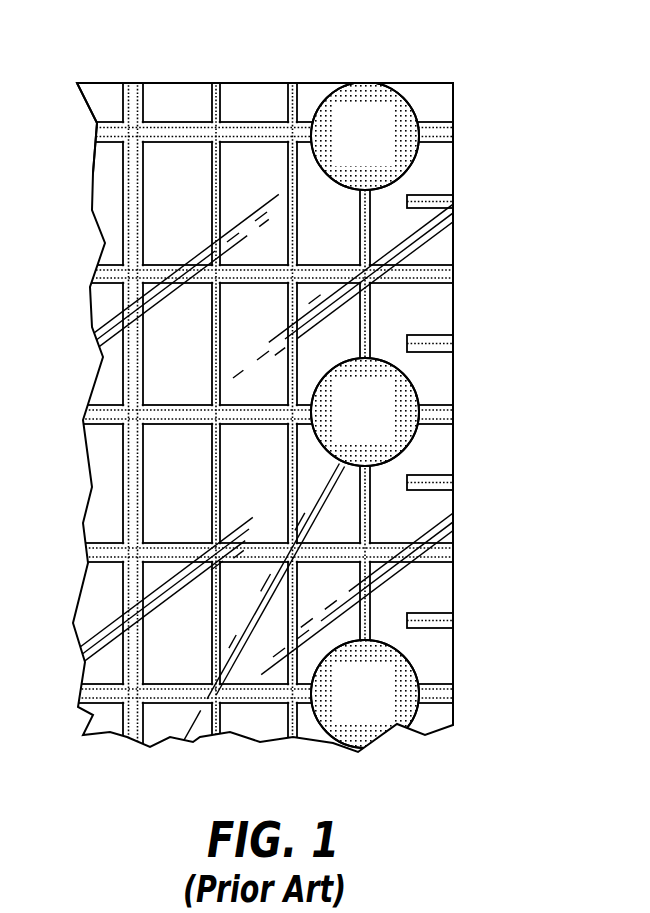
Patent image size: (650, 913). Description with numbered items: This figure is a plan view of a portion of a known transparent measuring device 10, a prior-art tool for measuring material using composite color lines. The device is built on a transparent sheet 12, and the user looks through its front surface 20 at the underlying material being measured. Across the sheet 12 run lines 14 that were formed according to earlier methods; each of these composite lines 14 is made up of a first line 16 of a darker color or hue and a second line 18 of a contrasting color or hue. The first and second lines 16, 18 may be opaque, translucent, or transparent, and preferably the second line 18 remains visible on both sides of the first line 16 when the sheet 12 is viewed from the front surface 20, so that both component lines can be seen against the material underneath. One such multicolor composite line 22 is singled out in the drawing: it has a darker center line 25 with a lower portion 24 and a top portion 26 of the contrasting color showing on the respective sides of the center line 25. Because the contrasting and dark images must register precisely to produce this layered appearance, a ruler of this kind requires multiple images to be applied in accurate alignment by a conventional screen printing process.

The transparent measuring device 10 is at (320, 385).
The sheet 12 is at (463, 236).
The lines 14 is at (114, 213).
The first line 16 is at (110, 405).
The second line 18 is at (123, 300).
The front surface 20 is at (263, 88).
The multicolor composite line 22 is at (104, 106).
The lower portion 24 is at (110, 147).
The darker center line 25 is at (170, 130).
The top portion 26 is at (222, 130).